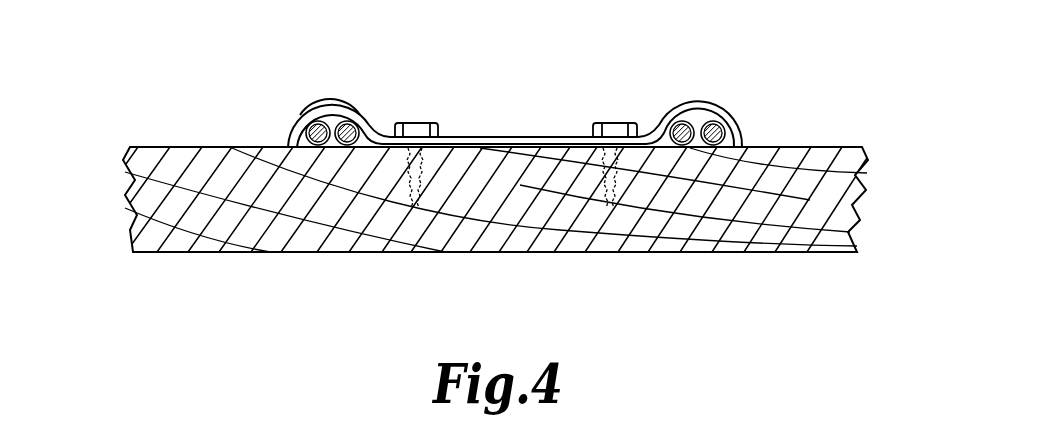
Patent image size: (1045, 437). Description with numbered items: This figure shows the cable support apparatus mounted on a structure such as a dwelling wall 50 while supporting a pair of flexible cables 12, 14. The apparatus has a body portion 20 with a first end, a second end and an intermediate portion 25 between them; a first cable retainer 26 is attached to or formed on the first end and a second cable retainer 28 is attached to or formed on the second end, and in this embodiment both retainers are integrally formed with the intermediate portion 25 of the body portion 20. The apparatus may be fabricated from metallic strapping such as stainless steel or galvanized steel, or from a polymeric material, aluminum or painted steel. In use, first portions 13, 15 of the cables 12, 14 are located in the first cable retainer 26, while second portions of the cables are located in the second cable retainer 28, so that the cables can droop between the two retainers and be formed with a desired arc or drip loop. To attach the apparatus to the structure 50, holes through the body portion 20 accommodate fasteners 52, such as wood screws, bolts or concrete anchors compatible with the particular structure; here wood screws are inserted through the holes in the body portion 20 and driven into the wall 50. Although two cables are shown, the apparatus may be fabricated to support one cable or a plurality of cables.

The flexible cable 12 is at (333, 167).
The first portion of cable 13 is at (320, 152).
The flexible cable 14 is at (350, 106).
The first portion of cable 15 is at (360, 152).
The body portion 20 is at (508, 167).
The intermediate portion 25 is at (493, 150).
The first cable retainer 26 is at (327, 98).
The second cable retainer 28 is at (730, 104).
The dwelling wall 50 is at (793, 263).
The fasteners 52 is at (425, 124).